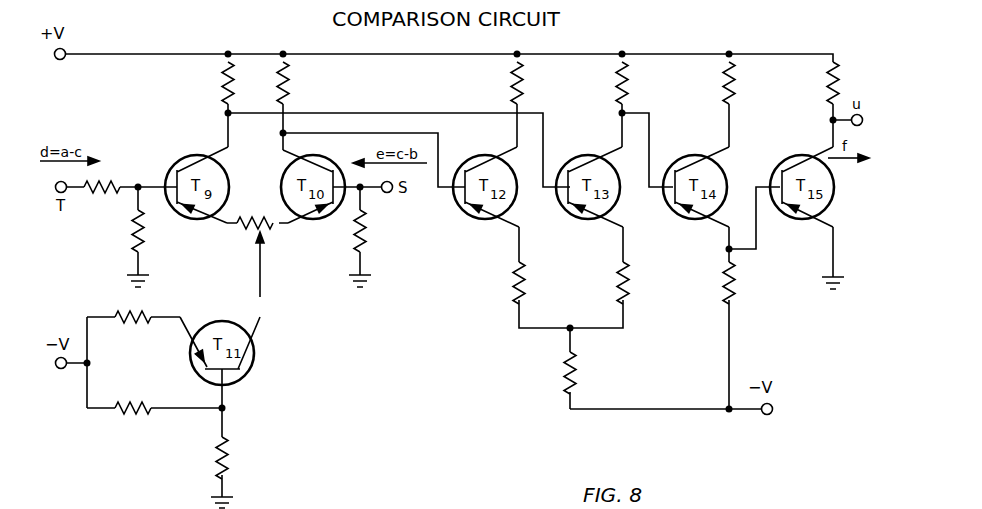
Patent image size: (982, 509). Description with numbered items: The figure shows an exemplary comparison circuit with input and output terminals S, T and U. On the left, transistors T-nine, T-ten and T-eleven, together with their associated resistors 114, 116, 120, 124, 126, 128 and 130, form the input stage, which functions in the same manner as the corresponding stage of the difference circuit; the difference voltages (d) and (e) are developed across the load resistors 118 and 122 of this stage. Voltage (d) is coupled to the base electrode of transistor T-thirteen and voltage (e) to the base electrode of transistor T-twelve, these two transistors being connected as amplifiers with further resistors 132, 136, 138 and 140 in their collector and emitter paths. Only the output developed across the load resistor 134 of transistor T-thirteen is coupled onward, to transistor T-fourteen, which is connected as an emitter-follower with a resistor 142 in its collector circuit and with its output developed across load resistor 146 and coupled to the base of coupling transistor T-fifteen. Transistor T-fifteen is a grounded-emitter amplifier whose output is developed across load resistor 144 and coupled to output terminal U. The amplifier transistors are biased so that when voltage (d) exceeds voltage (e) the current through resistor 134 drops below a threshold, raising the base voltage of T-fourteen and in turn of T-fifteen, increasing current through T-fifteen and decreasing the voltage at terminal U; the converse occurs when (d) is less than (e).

The input resistor 114 is at (106, 193).
The resistor to ground 116 is at (143, 233).
The load resistor 118 is at (222, 91).
The potentiometer between emitters of T9 and T10 120 is at (259, 218).
The load resistor 122 is at (290, 90).
The base resistor of T10 to ground 124 is at (356, 233).
The emitter resistor of T11 126 is at (133, 324).
The base resistor of T11 128 is at (135, 403).
The base resistor of T11 to ground 130 is at (229, 457).
The collector load resistor of T12 132 is at (513, 91).
The load resistor 134 is at (617, 91).
The emitter resistor of T12 136 is at (514, 288).
The emitter resistor of T13 138 is at (618, 288).
The common emitter resistor to -V 140 is at (565, 377).
The collector load resistor of T14 142 is at (723, 91).
The load resistor 144 is at (827, 91).
The load resistor 146 is at (723, 288).